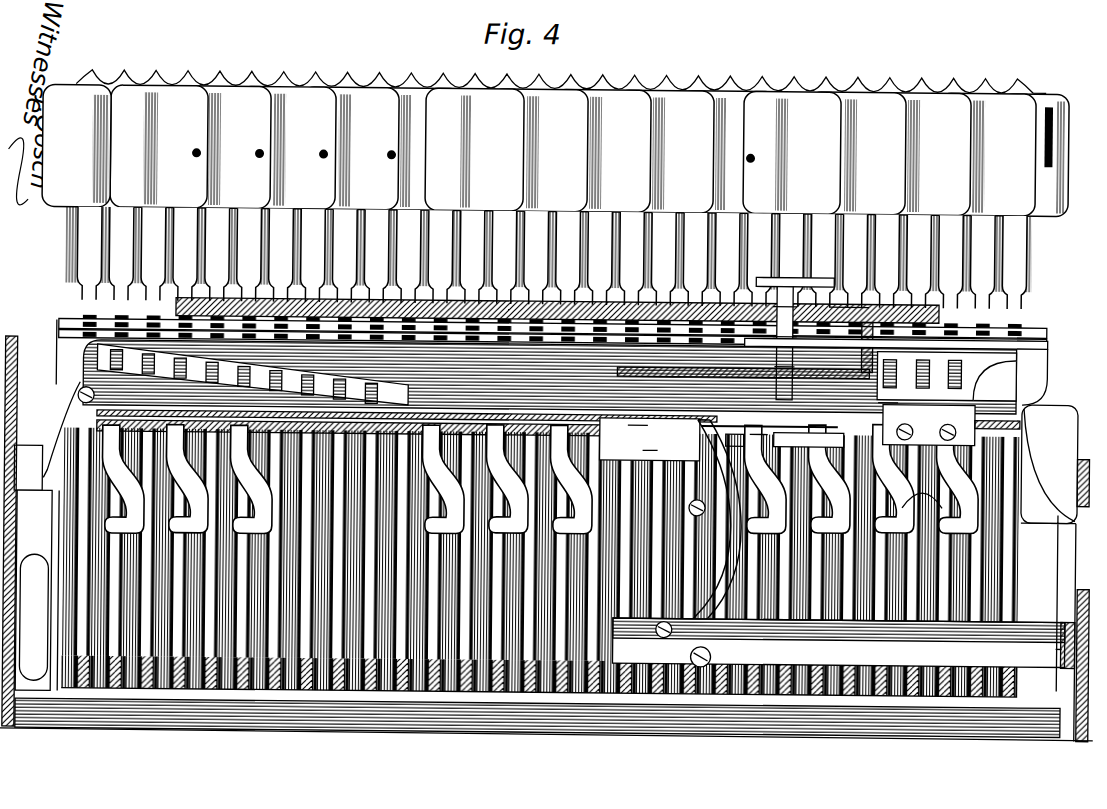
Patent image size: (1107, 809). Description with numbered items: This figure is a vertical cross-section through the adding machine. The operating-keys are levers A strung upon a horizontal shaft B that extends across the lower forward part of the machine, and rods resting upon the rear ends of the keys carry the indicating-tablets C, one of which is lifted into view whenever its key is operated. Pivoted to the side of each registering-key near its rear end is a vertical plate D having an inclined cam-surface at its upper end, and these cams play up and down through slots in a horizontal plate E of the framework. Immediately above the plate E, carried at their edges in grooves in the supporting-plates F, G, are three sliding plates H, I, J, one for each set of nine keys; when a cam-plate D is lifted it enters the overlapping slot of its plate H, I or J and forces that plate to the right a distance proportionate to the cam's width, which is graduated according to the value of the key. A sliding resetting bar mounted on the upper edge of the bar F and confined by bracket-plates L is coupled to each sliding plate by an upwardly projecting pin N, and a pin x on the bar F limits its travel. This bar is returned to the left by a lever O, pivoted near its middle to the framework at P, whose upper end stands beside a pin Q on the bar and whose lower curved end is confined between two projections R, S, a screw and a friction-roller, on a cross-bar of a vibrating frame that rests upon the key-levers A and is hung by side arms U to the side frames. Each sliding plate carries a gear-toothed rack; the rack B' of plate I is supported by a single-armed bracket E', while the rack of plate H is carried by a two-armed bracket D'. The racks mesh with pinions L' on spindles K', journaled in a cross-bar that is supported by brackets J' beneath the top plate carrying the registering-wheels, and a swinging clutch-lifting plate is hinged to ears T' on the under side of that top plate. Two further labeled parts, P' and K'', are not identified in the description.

The indicating-tablets C is at (1054, 208).
The pin N is at (518, 326).
The stop pin plate P' is at (794, 326).
The supporting-plate G is at (547, 377).
The sliding plate J is at (651, 378).
The horizontal plate E is at (407, 401).
The sliding plate I is at (506, 420).
The vertical plate D is at (537, 542).
The single-armed bracket E' is at (650, 439).
The pin Q is at (650, 441).
The gear-toothed rack B' is at (638, 415).
The two-armed bracket D' is at (769, 416).
The sliding plate H is at (735, 440).
The supporting-plate F is at (759, 440).
The spindle K' is at (809, 441).
The hatched bar K'' is at (745, 349).
The pinion L' is at (857, 354).
The lever O is at (772, 628).
The bracket-plates L is at (951, 425).
The brackets J' is at (888, 395).
The pivot P is at (698, 541).
The ears T' is at (843, 643).
The projection R is at (660, 628).
The projection S is at (708, 651).
The side arms U is at (1062, 642).
The horizontal shaft B is at (922, 502).
The pin x is at (1003, 408).
The key-levers A is at (1020, 684).